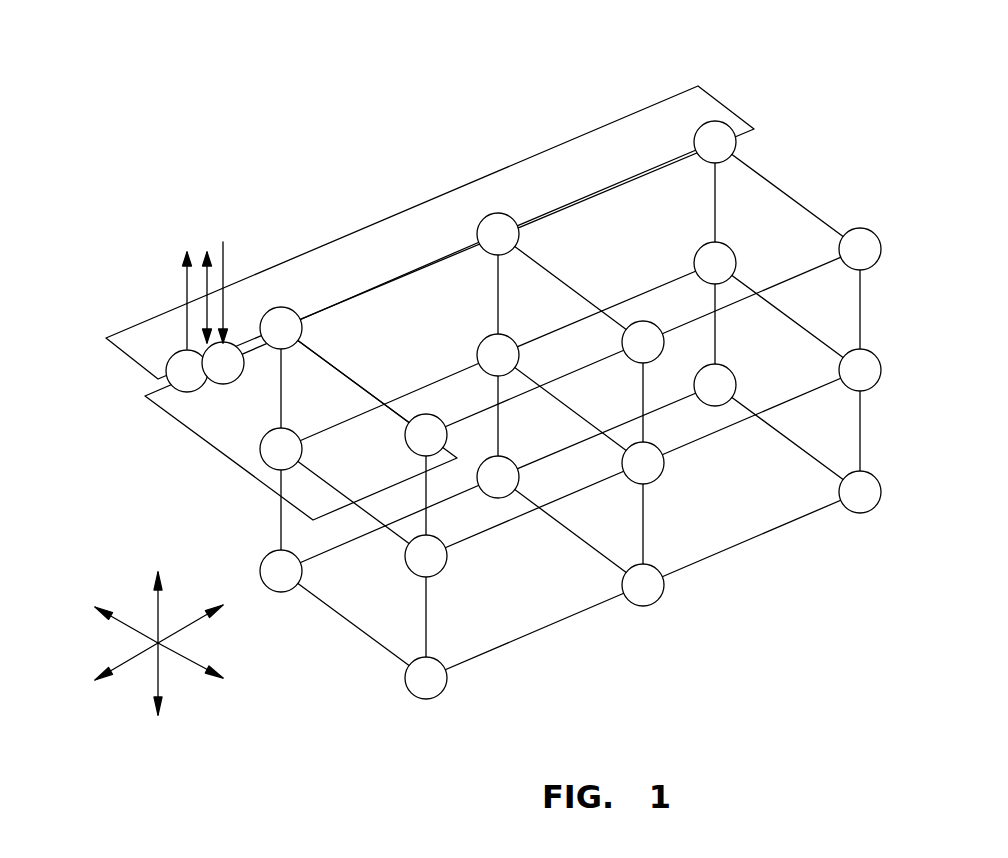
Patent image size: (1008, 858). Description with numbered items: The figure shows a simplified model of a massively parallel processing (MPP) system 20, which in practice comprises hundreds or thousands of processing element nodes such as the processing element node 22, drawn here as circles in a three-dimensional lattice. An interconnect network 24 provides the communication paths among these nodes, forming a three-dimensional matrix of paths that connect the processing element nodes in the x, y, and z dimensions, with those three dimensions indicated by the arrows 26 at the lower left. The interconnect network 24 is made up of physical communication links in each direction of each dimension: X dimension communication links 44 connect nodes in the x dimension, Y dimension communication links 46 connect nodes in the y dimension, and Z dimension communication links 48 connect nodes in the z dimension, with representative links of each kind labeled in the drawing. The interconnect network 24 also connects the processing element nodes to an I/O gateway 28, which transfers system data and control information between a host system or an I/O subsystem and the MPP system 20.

The massively parallel processing (MPP) system 20 is at (487, 354).
The processing element node 22 is at (654, 587).
The interconnect network 24 is at (570, 397).
The arrows 26 is at (202, 717).
The I/O gateway 28 is at (183, 358).
The X dimension communication links 44 is at (597, 190).
The Y dimension communication links 46 is at (427, 615).
The Z dimension communication links 48 is at (808, 207).